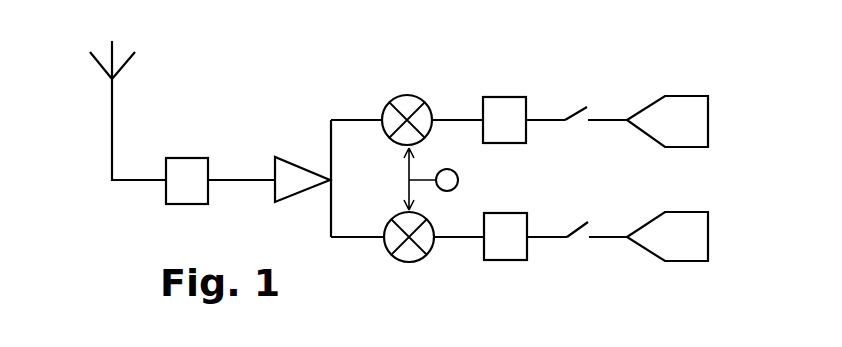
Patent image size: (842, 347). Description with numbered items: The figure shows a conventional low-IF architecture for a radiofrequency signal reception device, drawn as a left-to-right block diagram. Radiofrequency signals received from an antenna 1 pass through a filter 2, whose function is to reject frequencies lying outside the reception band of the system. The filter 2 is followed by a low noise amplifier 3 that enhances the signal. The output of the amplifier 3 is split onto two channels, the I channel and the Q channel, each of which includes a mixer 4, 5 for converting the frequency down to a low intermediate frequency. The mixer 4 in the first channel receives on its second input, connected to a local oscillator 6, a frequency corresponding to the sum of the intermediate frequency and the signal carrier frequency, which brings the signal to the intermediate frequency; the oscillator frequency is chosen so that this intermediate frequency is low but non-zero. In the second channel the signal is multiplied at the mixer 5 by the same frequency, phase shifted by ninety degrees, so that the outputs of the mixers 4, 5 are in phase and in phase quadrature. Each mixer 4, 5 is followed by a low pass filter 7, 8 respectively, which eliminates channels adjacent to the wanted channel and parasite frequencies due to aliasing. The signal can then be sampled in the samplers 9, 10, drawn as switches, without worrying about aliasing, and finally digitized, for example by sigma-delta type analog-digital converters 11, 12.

The antenna 1 is at (112, 130).
The filter 2 is at (185, 158).
The low noise amplifier 3 is at (305, 169).
The mixer 4 is at (410, 97).
The mixer 5 is at (409, 263).
The local oscillator 6 is at (458, 178).
The low pass filter 7 is at (500, 97).
The low pass filter 8 is at (508, 260).
The sampler 9 is at (582, 107).
The sampler 10 is at (577, 237).
The analog-digital converter 11 is at (690, 96).
The analog-digital converter 12 is at (685, 261).